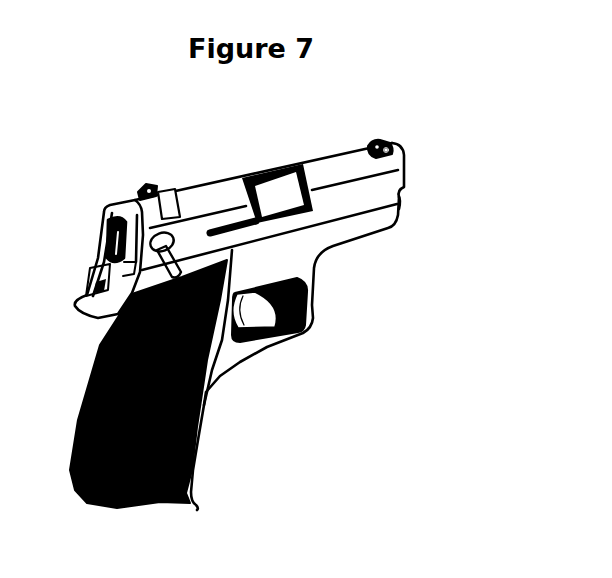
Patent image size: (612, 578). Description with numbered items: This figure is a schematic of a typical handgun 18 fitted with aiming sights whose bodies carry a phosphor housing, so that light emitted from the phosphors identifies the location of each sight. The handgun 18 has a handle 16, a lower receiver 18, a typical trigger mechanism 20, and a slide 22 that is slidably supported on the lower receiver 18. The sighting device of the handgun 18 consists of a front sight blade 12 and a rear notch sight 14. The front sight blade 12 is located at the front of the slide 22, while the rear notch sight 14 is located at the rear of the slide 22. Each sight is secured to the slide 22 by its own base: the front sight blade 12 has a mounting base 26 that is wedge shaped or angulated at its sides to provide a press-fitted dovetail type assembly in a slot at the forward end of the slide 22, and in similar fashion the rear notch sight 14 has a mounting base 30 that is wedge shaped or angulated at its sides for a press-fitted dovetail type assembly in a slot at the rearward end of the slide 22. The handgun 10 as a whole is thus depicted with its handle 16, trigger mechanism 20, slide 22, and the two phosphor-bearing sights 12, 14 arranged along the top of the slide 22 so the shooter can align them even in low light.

The pistol frame 10 is at (337, 295).
The front sight blade 12 is at (378, 126).
The rear notch sight 14 is at (127, 184).
The handle 16 is at (209, 440).
The handgun 18 is at (412, 213).
The trigger mechanism 20 is at (271, 353).
The slide 22 is at (328, 160).
The mounting base 26 is at (393, 152).
The mounting base 30 is at (190, 203).